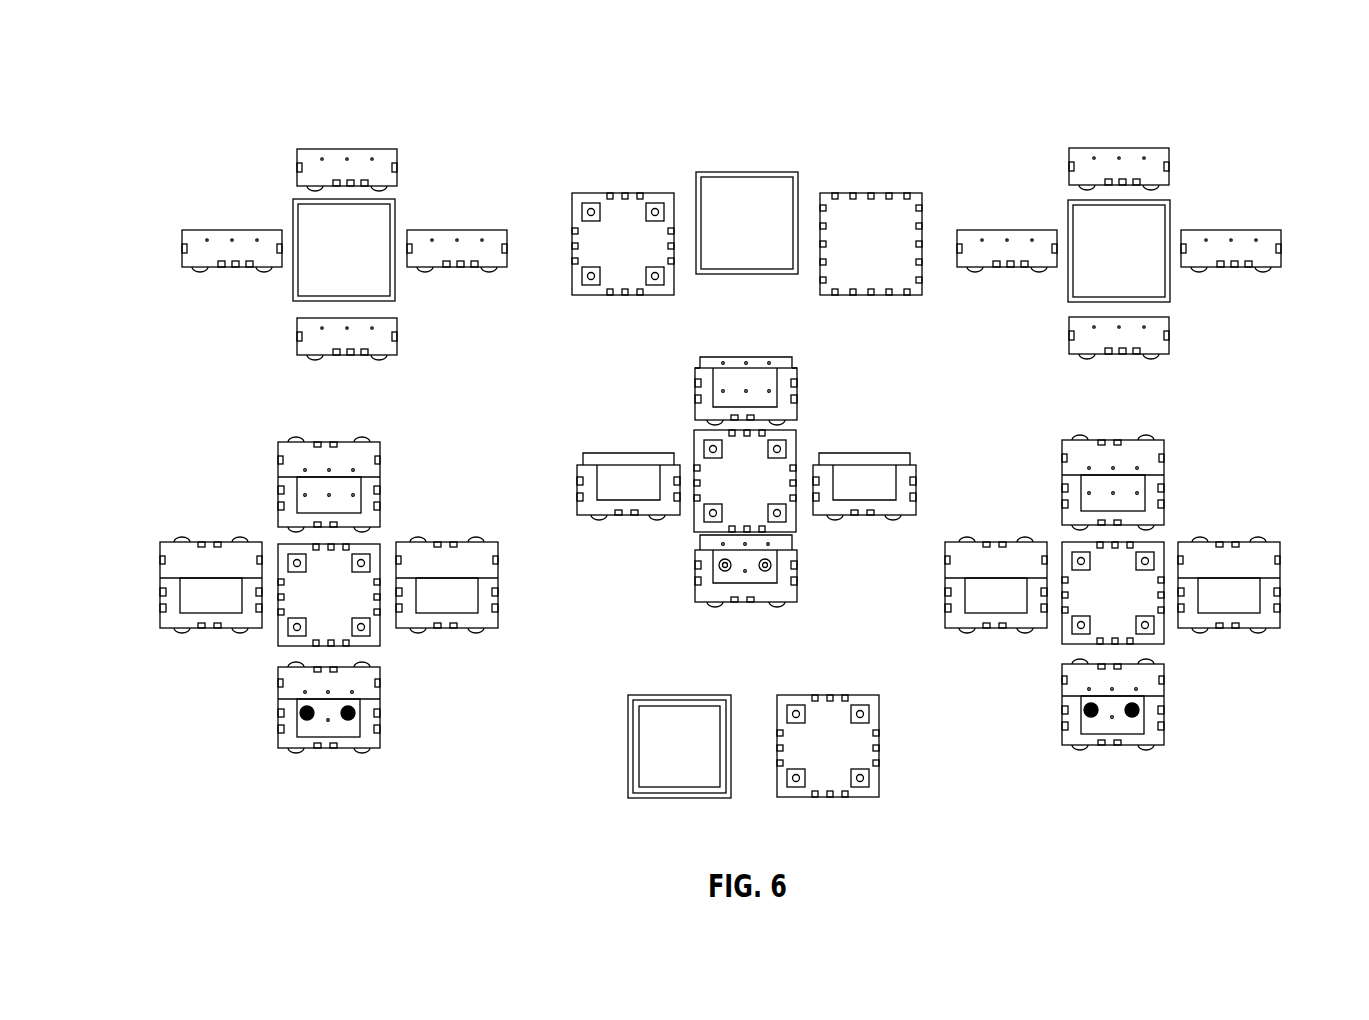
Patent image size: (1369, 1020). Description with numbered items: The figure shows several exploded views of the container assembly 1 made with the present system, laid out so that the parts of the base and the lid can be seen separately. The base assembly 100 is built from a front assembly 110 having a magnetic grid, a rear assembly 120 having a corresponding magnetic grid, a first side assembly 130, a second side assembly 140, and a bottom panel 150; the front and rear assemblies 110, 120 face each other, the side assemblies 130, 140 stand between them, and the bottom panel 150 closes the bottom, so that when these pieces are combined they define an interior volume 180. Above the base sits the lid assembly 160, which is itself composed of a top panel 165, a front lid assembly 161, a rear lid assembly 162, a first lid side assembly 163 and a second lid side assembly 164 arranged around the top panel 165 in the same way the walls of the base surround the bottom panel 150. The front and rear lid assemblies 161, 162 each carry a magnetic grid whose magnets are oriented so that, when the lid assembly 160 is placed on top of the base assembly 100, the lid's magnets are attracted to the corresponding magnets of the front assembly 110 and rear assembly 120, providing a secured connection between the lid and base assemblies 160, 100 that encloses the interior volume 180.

The modular building block assembly 1 is at (280, 790).
The base assembly 100 is at (707, 647).
The front assembly 110 is at (277, 688).
The rear assembly 120 is at (330, 442).
The first side assembly 130 is at (192, 542).
The second side assembly 140 is at (443, 543).
The bottom panel 150 is at (323, 562).
The lid assembly 160 is at (835, 168).
The front lid assembly 161 is at (300, 208).
The rear lid assembly 162 is at (297, 324).
The first lid side assembly 163 is at (338, 149).
The second lid side assembly 164 is at (212, 230).
The top panel 165 is at (450, 230).
The interior volume 180 is at (647, 723).